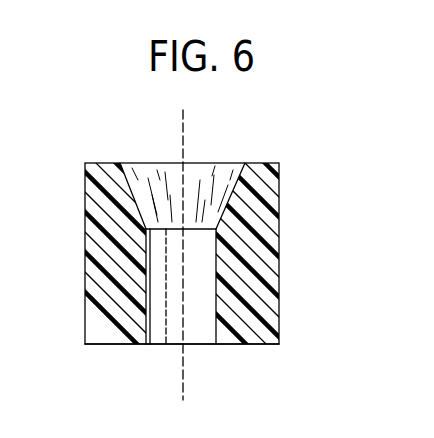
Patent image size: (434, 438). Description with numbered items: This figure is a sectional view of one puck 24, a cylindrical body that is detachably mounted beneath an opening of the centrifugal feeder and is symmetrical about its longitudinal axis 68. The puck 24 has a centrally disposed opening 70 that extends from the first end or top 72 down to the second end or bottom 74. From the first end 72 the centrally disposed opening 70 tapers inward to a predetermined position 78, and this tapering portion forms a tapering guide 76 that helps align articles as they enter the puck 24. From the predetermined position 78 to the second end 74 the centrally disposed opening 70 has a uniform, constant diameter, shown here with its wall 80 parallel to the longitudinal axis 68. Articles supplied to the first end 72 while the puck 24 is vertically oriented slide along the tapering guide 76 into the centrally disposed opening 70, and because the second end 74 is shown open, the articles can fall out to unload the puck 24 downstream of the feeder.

The puck 24 is at (77, 240).
The longitudinal axis 68 is at (183, 388).
The centrally disposed opening 70 is at (197, 307).
The first end 72 is at (270, 163).
The second end 74 is at (253, 344).
The tapering guide 76 is at (124, 196).
The predetermined position 78 is at (232, 172).
The bore wall 80 is at (158, 344).